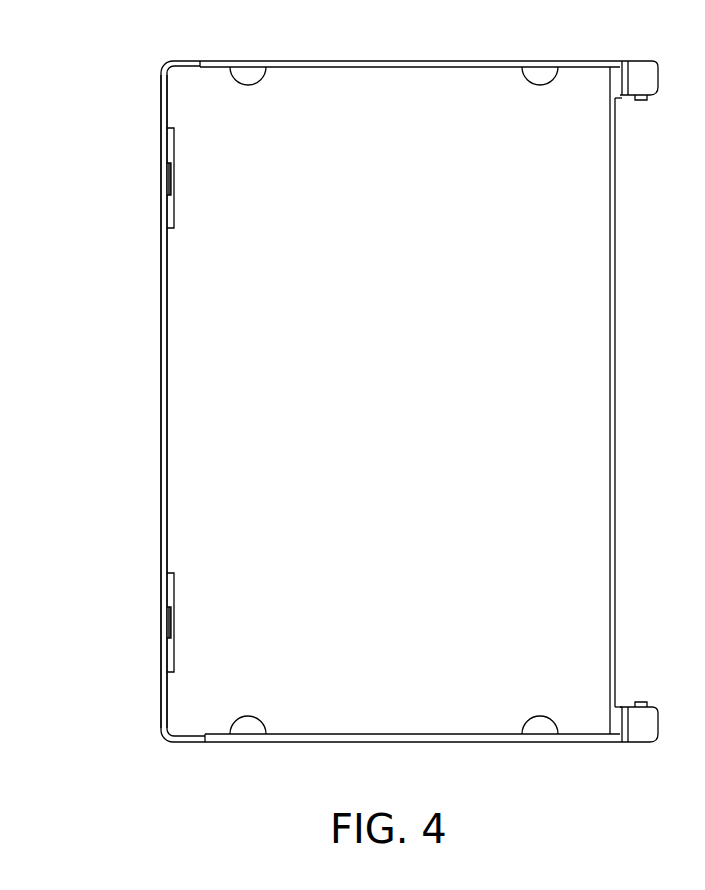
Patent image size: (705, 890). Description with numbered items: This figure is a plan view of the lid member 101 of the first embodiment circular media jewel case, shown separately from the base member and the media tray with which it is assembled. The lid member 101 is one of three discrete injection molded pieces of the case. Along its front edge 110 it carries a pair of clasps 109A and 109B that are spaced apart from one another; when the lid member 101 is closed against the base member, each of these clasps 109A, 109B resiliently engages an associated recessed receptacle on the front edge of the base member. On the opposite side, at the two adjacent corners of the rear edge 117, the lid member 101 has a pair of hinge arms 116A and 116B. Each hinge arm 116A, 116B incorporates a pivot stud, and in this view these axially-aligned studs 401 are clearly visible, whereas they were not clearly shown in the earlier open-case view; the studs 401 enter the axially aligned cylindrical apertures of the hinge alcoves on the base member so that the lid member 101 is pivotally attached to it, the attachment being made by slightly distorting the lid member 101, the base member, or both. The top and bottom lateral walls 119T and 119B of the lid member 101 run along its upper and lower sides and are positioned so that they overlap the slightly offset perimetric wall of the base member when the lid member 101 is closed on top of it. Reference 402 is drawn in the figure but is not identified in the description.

The lid member 101 is at (154, 52).
The front edge 110 is at (156, 419).
The rear edge 117 is at (622, 377).
The top lateral wall 119T is at (322, 64).
The bottom lateral wall 119B is at (322, 740).
The panel opening 402 is at (434, 118).
The clasp 109A is at (166, 178).
The clasp 109B is at (168, 623).
The hinge arm 116A is at (641, 80).
The hinge arm 116B is at (645, 722).
The axially-aligned studs 401 is at (640, 102).